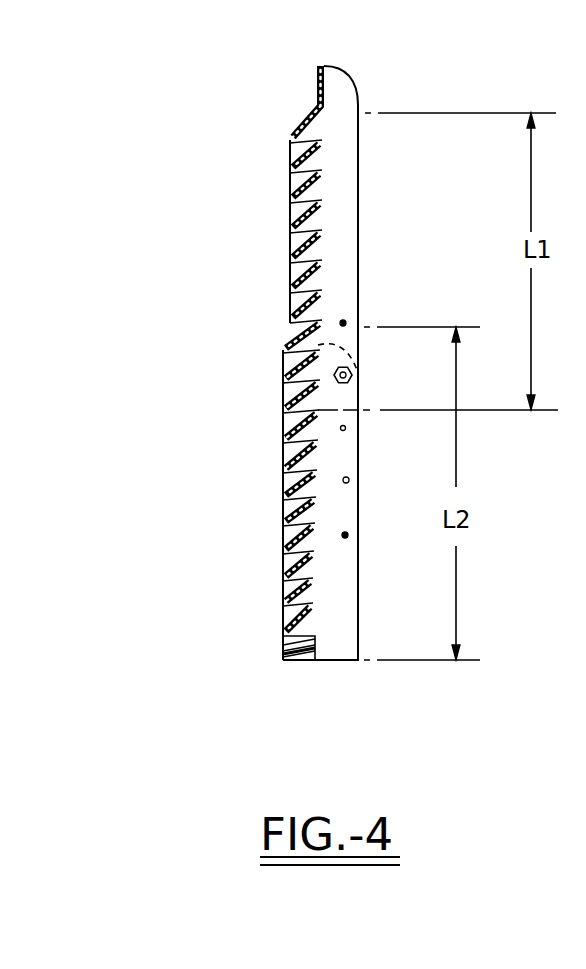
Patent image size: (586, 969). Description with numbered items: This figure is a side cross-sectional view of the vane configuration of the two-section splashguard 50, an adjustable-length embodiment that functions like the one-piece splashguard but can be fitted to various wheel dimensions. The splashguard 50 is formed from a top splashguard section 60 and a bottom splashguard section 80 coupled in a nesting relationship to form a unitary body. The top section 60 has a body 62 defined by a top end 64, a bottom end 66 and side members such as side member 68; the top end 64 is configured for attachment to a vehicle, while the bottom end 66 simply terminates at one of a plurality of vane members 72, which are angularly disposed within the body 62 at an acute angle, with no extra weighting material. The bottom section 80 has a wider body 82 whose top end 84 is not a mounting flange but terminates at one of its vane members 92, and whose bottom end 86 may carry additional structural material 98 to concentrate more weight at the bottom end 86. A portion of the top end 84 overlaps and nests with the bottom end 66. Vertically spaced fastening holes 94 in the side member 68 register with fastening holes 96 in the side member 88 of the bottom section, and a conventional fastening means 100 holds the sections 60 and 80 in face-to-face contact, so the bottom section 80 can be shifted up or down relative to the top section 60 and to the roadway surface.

The splashguard 50 is at (262, 138).
The top end 64 is at (317, 66).
The side member 68 is at (352, 206).
The top splashguard section 60 is at (280, 273).
The body 62 is at (278, 313).
The vane members 72 is at (290, 217).
The fastening holes 94 is at (344, 322).
The fastening means 100 is at (352, 368).
The bottom end 66 is at (351, 394).
The top end 84 is at (283, 367).
The bottom splashguard section 80 is at (273, 447).
The vane members 92 is at (283, 510).
The body 82 is at (273, 547).
The bottom end 86 is at (283, 656).
The side member 88 is at (353, 603).
The fastening holes 96 is at (346, 533).
The additional structural material 98 is at (298, 661).